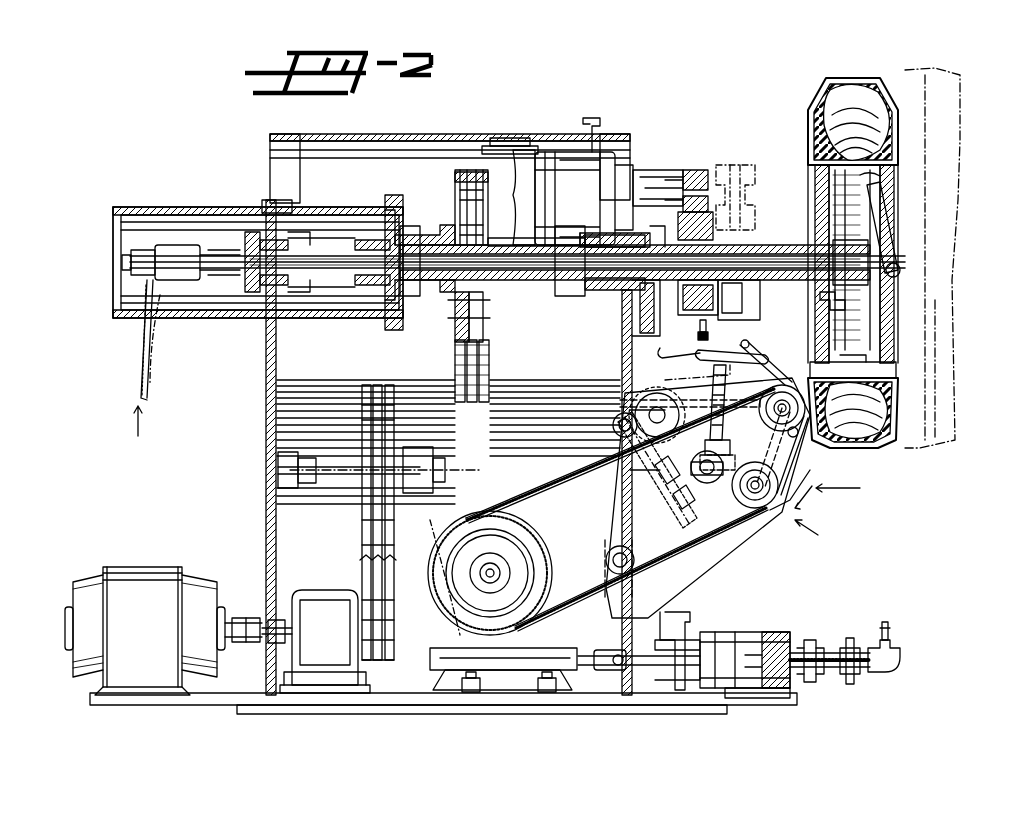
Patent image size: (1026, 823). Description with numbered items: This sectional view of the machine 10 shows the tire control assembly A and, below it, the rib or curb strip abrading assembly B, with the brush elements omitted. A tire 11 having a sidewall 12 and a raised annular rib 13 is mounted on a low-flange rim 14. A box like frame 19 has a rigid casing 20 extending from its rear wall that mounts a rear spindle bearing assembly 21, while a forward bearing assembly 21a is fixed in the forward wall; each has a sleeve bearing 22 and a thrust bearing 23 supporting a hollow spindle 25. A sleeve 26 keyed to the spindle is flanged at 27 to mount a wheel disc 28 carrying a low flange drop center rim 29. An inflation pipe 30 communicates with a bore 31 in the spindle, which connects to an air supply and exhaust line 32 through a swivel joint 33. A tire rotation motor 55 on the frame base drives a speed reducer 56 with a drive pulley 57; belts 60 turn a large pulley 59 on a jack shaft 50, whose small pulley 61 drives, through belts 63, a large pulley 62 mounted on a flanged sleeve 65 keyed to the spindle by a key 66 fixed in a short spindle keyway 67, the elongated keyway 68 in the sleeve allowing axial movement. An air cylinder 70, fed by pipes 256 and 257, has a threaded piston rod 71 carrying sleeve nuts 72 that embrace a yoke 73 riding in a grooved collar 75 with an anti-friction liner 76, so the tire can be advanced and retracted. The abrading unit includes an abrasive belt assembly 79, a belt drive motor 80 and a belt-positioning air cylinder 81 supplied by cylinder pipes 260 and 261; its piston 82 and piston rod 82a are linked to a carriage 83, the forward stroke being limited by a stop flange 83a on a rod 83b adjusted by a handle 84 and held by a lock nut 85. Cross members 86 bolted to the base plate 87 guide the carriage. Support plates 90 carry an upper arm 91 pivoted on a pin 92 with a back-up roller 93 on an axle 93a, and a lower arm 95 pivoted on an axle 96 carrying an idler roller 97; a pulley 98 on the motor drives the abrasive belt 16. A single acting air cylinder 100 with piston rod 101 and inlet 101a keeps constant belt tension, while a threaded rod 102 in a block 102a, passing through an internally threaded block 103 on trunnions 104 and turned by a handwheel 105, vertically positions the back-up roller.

The machine 10 is at (490, 78).
The tire 11 is at (885, 62).
The sidewall 12 is at (905, 128).
The raised annular rib 13 is at (905, 100).
The low-flange rim 14 is at (918, 304).
The abrasive belt 16 is at (782, 470).
The box like frame 19 is at (270, 150).
The rigid casing 20 is at (222, 210).
The rear spindle bearing assembly 21 is at (370, 240).
The forward bearing assembly 21a is at (606, 235).
The sleeve bearing 22 is at (365, 292).
The thrust bearing 23 is at (445, 296).
The hollow spindle 25 is at (762, 310).
The sleeve 26 is at (760, 245).
The flange 27 is at (830, 300).
The wheel disc 28 is at (884, 322).
The low flange drop center rim 29 is at (898, 356).
The inflation pipe 30 is at (900, 190).
The bore 31 is at (545, 268).
The air supply and exhaust line 32 is at (152, 338).
The swivel joint 33 is at (172, 245).
The jack shaft 50 is at (278, 468).
The tire rotation motor 55 is at (145, 580).
The speed reducer 56 is at (310, 590).
The drive pulley 57 is at (365, 595).
The large pulley 59 is at (362, 533).
The belts 60 is at (372, 560).
The small pulley 61 is at (420, 484).
The spindle pulley 62 is at (457, 320).
The belts 63 is at (465, 378).
The flanged sleeve 65 is at (410, 235).
The key 66 is at (478, 225).
The spindle keyway 67 is at (505, 230).
The keyway 68 is at (448, 235).
The air cylinder 70 is at (598, 189).
The threaded piston rod 71 is at (740, 192).
The sleeve nuts 72 is at (715, 150).
The yoke 73 is at (696, 170).
The grooved collar 75 is at (662, 300).
The anti-friction liner 76 is at (720, 320).
The abrasive belt assembly 79 is at (852, 490).
The belt drive motor 80 is at (450, 530).
The belt-positioning air cylinder 81 is at (750, 642).
The piston 82 is at (735, 642).
The piston rod 82a is at (650, 665).
The belt assembly carriage 83 is at (530, 690).
The stop flange 83a is at (758, 690).
The rod 83b is at (828, 672).
The handle 84 is at (852, 640).
The lock nut 85 is at (812, 640).
The cross members 86 is at (470, 693).
The base plate 87 is at (600, 714).
The support plates 90 is at (622, 500).
The upper arm 91 is at (672, 400).
The pin 92 is at (625, 393).
The back-up roller 93 is at (772, 395).
The axle 93a is at (792, 430).
The lower arm 95 is at (718, 520).
The axle 96 is at (620, 553).
The idler roller 97 is at (780, 510).
The pulley 98 is at (430, 568).
The single acting air cylinder 100 is at (632, 506).
The piston rod 101 is at (672, 510).
The inlet 101a is at (618, 412).
The threaded rod 102 is at (762, 362).
The block 102a is at (689, 461).
The internally threaded block 103 is at (730, 440).
The trunnions 104 is at (690, 372).
The handwheel 105 is at (700, 350).
The pipe 256 is at (510, 138).
The pipe 257 is at (584, 118).
The cylinder pipe 260 is at (680, 628).
The cylinder pipe 261 is at (892, 640).
The tire control assembly A is at (918, 251).
The rib or curb strip abrading assembly B is at (813, 535).